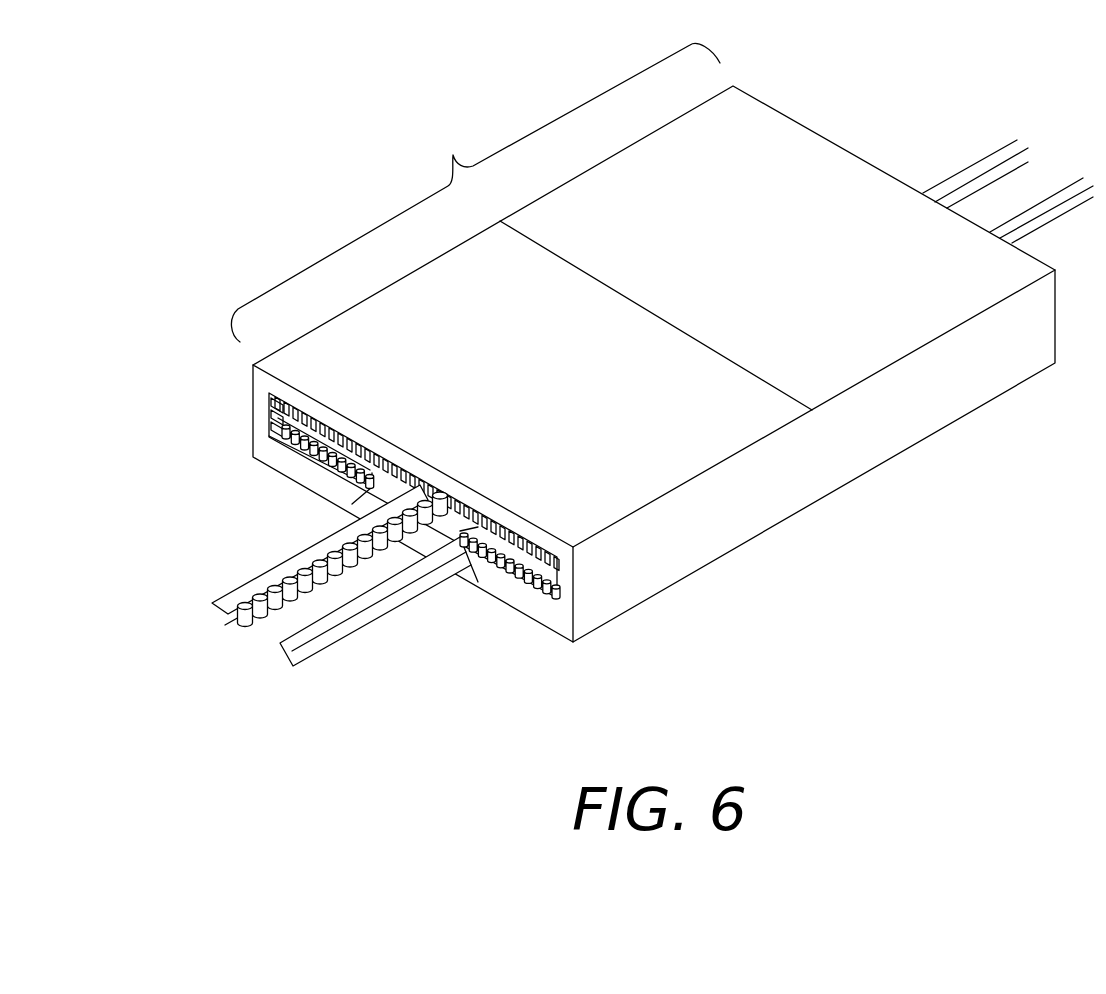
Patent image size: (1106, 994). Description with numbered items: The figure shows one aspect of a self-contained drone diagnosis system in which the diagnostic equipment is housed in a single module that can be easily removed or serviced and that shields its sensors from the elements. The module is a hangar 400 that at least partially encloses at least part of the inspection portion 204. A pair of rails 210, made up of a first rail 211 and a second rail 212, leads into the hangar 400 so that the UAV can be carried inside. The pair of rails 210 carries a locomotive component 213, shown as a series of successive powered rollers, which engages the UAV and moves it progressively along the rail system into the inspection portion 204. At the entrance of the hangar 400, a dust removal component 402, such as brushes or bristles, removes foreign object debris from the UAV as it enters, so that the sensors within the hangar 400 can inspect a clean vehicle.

The hangar 400 is at (858, 139).
The inspection portion 204 is at (475, 193).
The locomotive component 213 is at (310, 575).
The first rail 211 is at (216, 617).
The second rail 212 is at (282, 658).
The dust removal component 402 is at (522, 582).
The pair of rails 210 is at (193, 673).